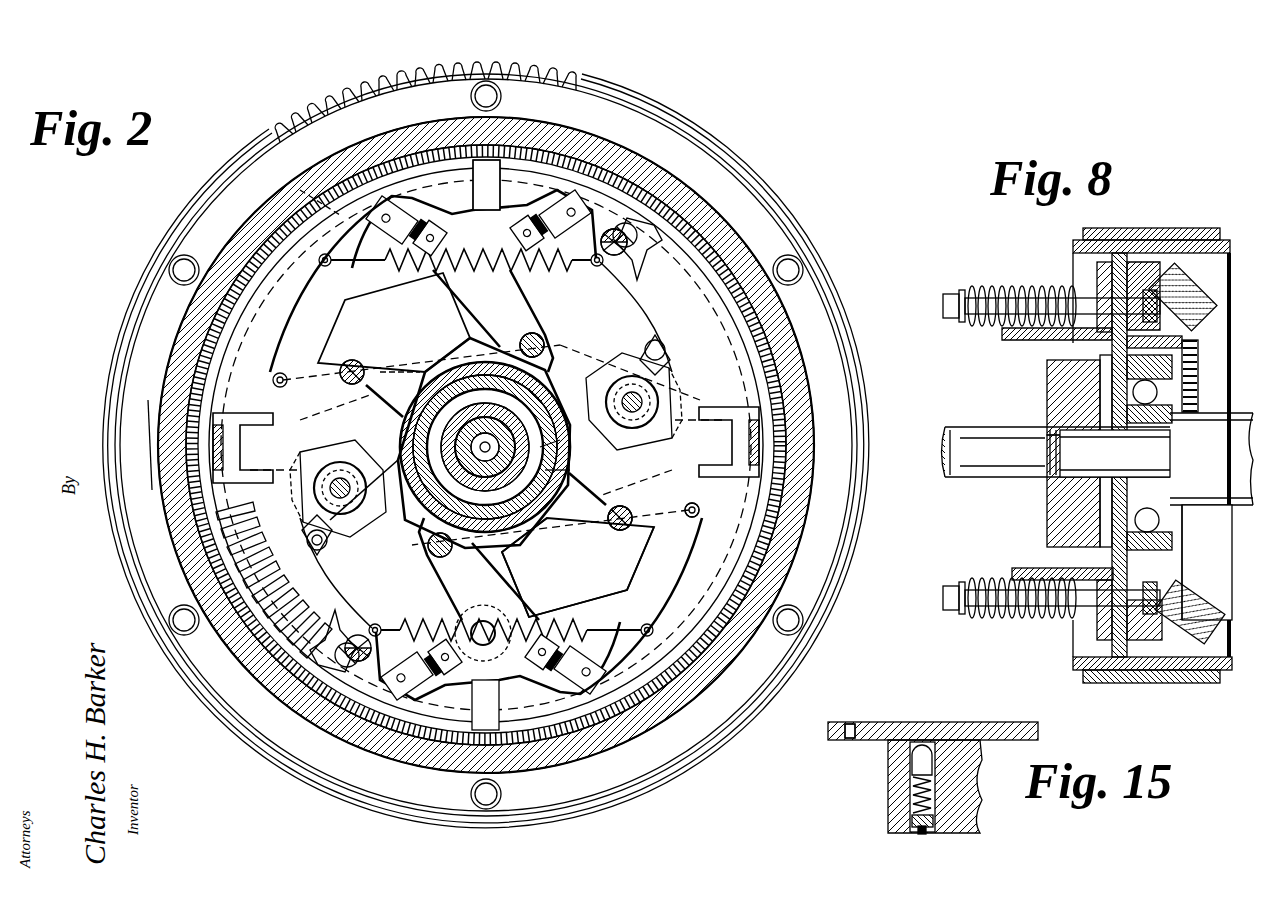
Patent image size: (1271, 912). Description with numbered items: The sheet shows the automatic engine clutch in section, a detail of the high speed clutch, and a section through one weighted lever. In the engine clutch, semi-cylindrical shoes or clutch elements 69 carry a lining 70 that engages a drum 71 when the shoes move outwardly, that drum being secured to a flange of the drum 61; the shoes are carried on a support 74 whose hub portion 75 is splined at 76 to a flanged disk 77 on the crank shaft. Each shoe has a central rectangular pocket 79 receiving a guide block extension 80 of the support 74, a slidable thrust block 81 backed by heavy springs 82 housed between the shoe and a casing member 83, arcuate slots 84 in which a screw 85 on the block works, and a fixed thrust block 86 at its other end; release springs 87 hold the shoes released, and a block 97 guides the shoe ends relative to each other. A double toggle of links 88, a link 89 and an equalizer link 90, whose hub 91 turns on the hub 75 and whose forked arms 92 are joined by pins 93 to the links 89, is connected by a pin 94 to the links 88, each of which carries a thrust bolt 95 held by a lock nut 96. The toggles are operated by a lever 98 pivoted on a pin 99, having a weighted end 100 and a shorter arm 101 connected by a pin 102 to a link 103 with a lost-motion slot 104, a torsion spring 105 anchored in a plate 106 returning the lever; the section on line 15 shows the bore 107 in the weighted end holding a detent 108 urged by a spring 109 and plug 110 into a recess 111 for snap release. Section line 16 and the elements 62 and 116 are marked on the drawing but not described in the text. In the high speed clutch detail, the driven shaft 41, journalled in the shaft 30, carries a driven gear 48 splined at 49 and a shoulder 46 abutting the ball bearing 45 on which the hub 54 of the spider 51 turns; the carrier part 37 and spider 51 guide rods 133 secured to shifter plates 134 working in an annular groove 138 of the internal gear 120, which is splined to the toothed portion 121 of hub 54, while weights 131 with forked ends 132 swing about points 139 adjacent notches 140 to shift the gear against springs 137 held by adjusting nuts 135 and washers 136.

In FIG. 2, the section line 15 is at (404, 350).
In FIG. 2, the section line 16 is at (395, 606).
In FIG. 2, the shaft 30 is at (556, 375).
In FIG. 8, the part of planetary gear carrier 37 is at (1080, 568).
In FIG. 8, the driven shaft 41 is at (990, 460).
In FIG. 8, the ball bearing 45 is at (1145, 405).
In FIG. 8, the shoulder 46 is at (1165, 455).
In FIG. 8, the driven gear 48 is at (1050, 380).
In FIG. 8, the spline 49 is at (1108, 440).
In FIG. 8, the spider or flanged disk 51 is at (1118, 632).
In FIG. 8, the hub 54 is at (1200, 560).
In FIG. 2, the drum 61 is at (580, 466).
In FIG. 2, the lug 62 is at (567, 436).
In FIG. 2, the clutch elements or shoes 69 is at (262, 292).
In FIG. 2, the lining 70 is at (762, 532).
In FIG. 2, the drum 71 is at (798, 455).
In FIG. 2, the support 74 is at (375, 525).
In FIG. 15, the support 74 is at (945, 722).
In FIG. 2, the hub portion 75 is at (520, 520).
In FIG. 2, the spline 76 is at (545, 515).
In FIG. 2, the flanged disk 77 is at (530, 490).
In FIG. 2, the rectangular pockets 79 is at (165, 445).
In FIG. 2, the guide block extensions 80 is at (318, 448).
In FIG. 2, the thrust block 81 is at (612, 232).
In FIG. 2, the springs 82 is at (232, 650).
In FIG. 2, the casing member 83 is at (300, 570).
In FIG. 2, the arcuate slots 84 is at (645, 290).
In FIG. 2, the screw 85 is at (624, 240).
In FIG. 2, the thrust block 86 is at (325, 200).
In FIG. 2, the release springs 87 is at (410, 272).
In FIG. 2, the links 88 is at (450, 240).
In FIG. 2, the link 89 is at (470, 298).
In FIG. 2, the link or equalizer member 90 is at (492, 565).
In FIG. 2, the hub 91 is at (397, 356).
In FIG. 2, the forked arms 92 is at (560, 347).
In FIG. 2, the pins 93 is at (530, 340).
In FIG. 2, the pin 94 is at (478, 620).
In FIG. 2, the thrust bolt 95 is at (550, 215).
In FIG. 2, the lock nut 96 is at (495, 198).
In FIG. 2, the block 97 is at (486, 195).
In FIG. 2, the lever 98 is at (640, 486).
In FIG. 2, the pin 99 is at (314, 490).
In FIG. 2, the weighted end 100 is at (630, 548).
In FIG. 15, the weighted end 100 is at (982, 818).
In FIG. 2, the shorter arm 101 is at (670, 340).
In FIG. 2, the pin 102 is at (312, 536).
In FIG. 2, the link 103 is at (580, 345).
In FIG. 2, the slot 104 is at (408, 362).
In FIG. 2, the coiled torsion spring 105 is at (703, 352).
In FIG. 2, the plate 106 is at (486, 445).
In FIG. 15, the bore 107 is at (912, 805).
In FIG. 15, the detent 108 is at (918, 760).
In FIG. 15, the spring 109 is at (915, 792).
In FIG. 2, the plug 110 is at (610, 515).
In FIG. 15, the plug 110 is at (918, 830).
In FIG. 2, the recess 111 is at (708, 538).
In FIG. 15, the recess 111 is at (846, 742).
In FIG. 2, the bolt hole 116 is at (795, 275).
In FIG. 8, the annular clutch member or internal gear 120 is at (1185, 342).
In FIG. 8, the toothed portion 121 is at (1198, 372).
In FIG. 8, the weights 131 is at (1205, 290).
In FIG. 8, the forked end portions 132 is at (1150, 262).
In FIG. 8, the rods 133 is at (1090, 300).
In FIG. 8, the shifter plate 134 is at (1162, 315).
In FIG. 8, the tension adjusting nut 135 is at (950, 293).
In FIG. 8, the washer 136 is at (958, 320).
In FIG. 8, the spring 137 is at (992, 286).
In FIG. 8, the annular groove 138 is at (1190, 612).
In FIG. 8, the points 139 is at (1132, 275).
In FIG. 8, the notches 140 is at (1148, 265).